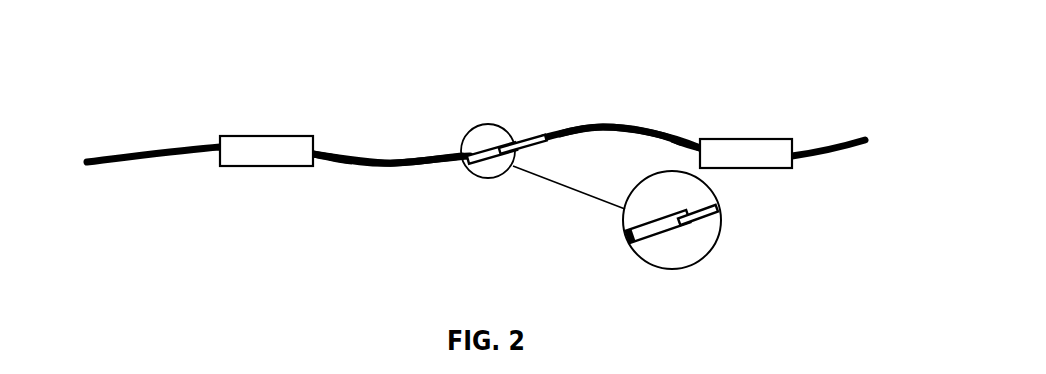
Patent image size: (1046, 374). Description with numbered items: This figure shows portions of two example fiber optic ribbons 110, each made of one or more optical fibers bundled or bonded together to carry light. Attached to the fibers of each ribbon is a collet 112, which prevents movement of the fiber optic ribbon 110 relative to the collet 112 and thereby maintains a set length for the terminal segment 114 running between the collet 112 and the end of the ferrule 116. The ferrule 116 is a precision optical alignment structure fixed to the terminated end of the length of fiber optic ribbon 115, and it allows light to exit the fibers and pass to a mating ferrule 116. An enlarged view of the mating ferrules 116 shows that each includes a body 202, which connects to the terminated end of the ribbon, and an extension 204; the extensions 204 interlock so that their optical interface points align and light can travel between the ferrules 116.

The fiber optic ribbon 110 is at (143, 88).
The collet 112 is at (265, 148).
The terminal segment 114 is at (395, 118).
The length of fiber optic ribbon 115 is at (351, 153).
The ferrule 116 is at (480, 150).
The body 202 is at (686, 228).
The extension 204 is at (716, 208).